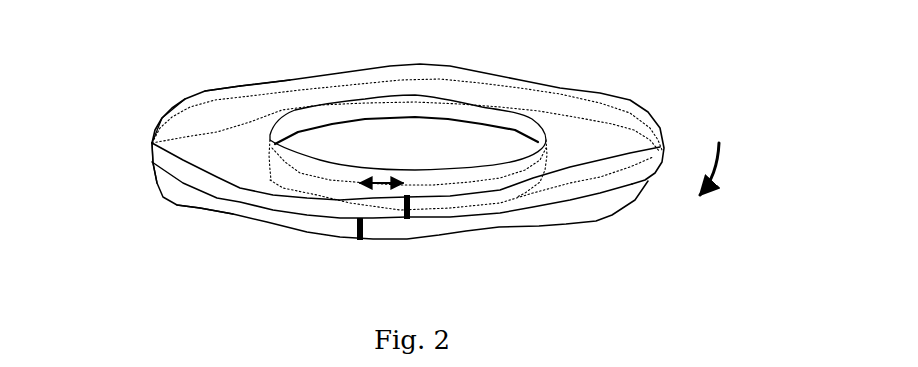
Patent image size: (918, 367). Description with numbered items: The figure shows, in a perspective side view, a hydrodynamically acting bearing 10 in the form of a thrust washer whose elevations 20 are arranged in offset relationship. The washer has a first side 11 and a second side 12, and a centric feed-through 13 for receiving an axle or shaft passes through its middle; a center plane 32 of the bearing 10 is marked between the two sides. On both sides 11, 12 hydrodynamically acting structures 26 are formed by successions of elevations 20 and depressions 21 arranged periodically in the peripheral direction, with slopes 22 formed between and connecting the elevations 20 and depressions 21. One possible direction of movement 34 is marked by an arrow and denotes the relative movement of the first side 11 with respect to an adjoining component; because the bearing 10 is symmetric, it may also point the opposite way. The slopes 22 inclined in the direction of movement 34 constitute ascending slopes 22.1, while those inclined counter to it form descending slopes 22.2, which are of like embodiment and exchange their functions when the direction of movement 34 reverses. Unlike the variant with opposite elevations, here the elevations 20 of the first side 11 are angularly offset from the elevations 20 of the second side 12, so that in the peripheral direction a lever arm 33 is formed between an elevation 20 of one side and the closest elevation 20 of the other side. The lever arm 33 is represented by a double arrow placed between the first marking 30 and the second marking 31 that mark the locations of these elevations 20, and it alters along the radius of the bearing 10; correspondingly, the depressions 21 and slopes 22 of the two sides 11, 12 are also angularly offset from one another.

The hydrodynamically acting bearing 10 is at (109, 74).
The first side 11 is at (196, 67).
The second side 12 is at (184, 233).
The centric feed-through 13 is at (326, 122).
The elevation 20 is at (411, 77).
The depression 21 is at (516, 93).
The slope 22 is at (469, 90).
The ascending slope 22.1 is at (634, 127).
The descending slope 22.2 is at (447, 225).
The hydrodynamically acting structure 26 is at (257, 46).
The first marking 30 is at (410, 210).
The second marking 31 is at (362, 222).
The center plane 32 is at (153, 167).
The lever arm 33 is at (382, 182).
The direction of movement 34 is at (719, 143).